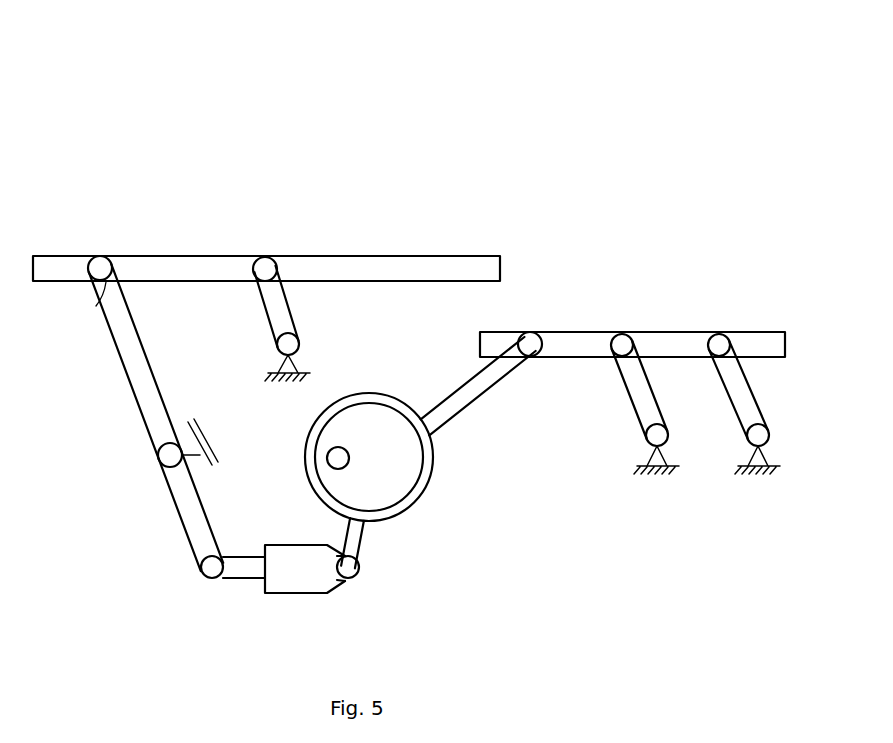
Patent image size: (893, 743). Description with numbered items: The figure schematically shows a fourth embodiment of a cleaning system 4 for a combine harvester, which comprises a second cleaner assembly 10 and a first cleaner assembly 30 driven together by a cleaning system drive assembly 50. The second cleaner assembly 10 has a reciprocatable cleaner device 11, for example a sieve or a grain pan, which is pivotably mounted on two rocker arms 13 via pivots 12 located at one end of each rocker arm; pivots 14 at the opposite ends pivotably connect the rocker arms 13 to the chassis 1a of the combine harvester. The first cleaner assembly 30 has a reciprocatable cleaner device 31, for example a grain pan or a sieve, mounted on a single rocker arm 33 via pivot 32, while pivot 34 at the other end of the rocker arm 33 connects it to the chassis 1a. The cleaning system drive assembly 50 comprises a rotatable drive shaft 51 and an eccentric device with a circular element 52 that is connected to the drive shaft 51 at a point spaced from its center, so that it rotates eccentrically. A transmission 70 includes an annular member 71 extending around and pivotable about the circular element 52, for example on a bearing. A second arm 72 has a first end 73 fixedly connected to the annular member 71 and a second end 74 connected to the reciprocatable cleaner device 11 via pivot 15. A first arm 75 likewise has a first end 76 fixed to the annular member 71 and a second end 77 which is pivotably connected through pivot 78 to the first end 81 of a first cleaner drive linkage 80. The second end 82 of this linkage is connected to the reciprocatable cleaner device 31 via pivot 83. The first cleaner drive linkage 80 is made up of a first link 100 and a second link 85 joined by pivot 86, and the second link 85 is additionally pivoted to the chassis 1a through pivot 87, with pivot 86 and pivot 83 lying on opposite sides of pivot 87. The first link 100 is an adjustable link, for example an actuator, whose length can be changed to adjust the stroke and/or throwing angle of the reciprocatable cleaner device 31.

The chassis 1a is at (658, 480).
The cleaning system 4 is at (442, 95).
The second cleaner assembly 10 is at (692, 240).
The reciprocatable cleaner device 11 is at (595, 333).
The pivots 12 is at (626, 342).
The rocker arms 13 is at (646, 400).
The pivots 14 is at (666, 437).
The pivot 15 is at (530, 330).
The first cleaner assembly 30 is at (182, 150).
The reciprocatable cleaner device 31 is at (308, 258).
The pivot 32 is at (265, 255).
The rocker arm 33 is at (288, 313).
The pivot 34 is at (298, 346).
The cleaning system drive assembly 50 is at (463, 534).
The rotatable drive shaft 51 is at (333, 462).
The circular element 52 is at (375, 420).
The transmission 70 is at (145, 592).
The annular member 71 is at (432, 474).
The second arm 72 is at (480, 397).
The first end 73 is at (425, 420).
The second end 74 is at (518, 366).
The first arm 75 is at (345, 531).
The first end 76 is at (367, 524).
The second end 77 is at (356, 556).
The pivot 78 is at (340, 579).
The first cleaner drive linkage 80 is at (280, 645).
The first end 81 is at (338, 577).
The second end 82 is at (98, 290).
The pivot 83 is at (107, 257).
The second link 85 is at (126, 372).
The pivot 86 is at (208, 580).
The pivot 87 is at (163, 462).
The first link 100 is at (273, 583).